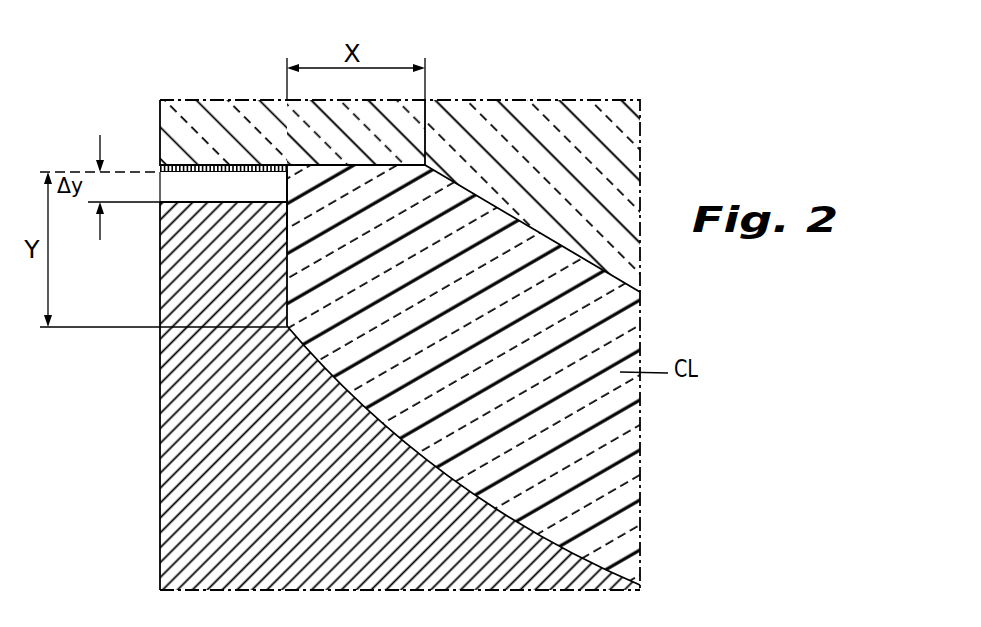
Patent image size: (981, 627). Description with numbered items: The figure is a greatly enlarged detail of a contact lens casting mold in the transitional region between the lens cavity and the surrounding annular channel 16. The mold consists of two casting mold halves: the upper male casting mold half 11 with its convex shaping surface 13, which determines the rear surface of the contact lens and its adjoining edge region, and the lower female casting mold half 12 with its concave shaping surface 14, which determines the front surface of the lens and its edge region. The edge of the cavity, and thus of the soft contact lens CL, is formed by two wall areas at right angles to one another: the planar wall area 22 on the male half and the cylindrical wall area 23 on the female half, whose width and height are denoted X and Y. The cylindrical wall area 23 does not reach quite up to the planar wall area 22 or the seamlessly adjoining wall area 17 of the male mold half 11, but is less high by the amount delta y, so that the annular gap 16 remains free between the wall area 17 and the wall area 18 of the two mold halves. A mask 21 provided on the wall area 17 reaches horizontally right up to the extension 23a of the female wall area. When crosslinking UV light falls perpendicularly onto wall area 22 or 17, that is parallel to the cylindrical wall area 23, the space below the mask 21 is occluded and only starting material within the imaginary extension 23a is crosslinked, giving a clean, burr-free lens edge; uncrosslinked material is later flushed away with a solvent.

The male casting mold half 11 is at (548, 108).
The female casting mold half 12 is at (172, 483).
The shaping surface 13 is at (543, 238).
The shaping surface 14 is at (430, 456).
The annular channel 16 is at (204, 187).
The wall area 17 is at (249, 159).
The wall area 18 is at (176, 198).
The mask 21 is at (166, 170).
The planar wall area 22 is at (378, 167).
The cylindrical wall area 23 is at (289, 251).
The extension of the wall area 23a is at (308, 208).